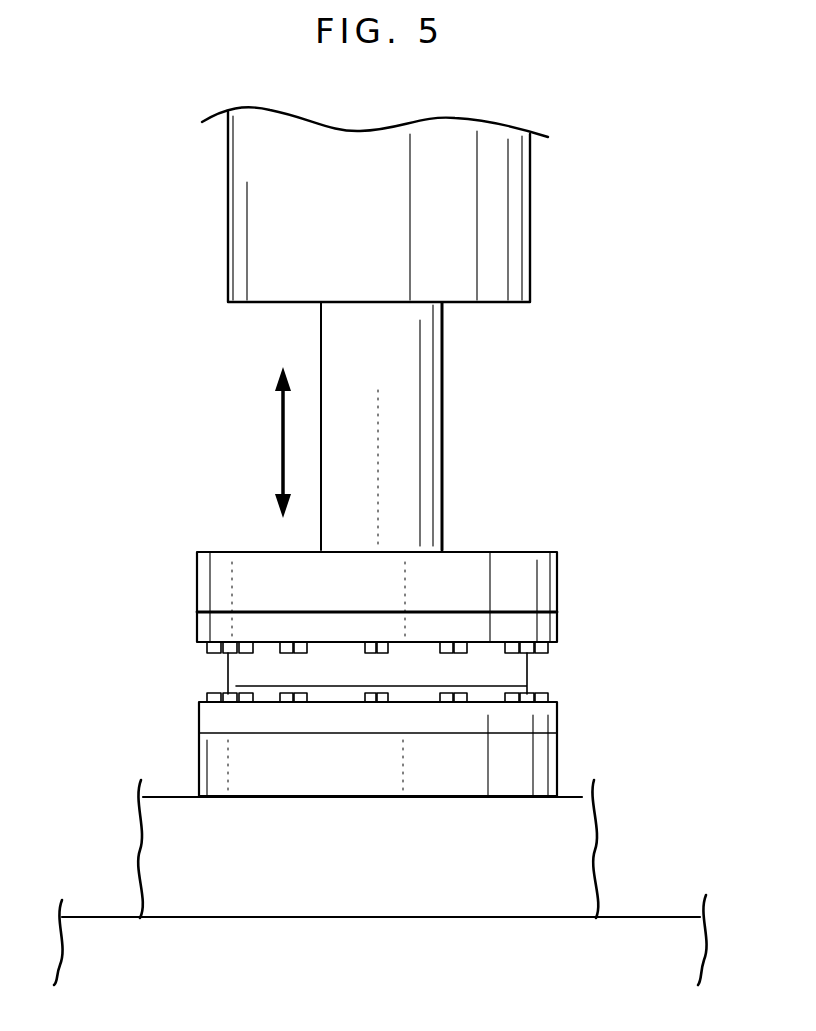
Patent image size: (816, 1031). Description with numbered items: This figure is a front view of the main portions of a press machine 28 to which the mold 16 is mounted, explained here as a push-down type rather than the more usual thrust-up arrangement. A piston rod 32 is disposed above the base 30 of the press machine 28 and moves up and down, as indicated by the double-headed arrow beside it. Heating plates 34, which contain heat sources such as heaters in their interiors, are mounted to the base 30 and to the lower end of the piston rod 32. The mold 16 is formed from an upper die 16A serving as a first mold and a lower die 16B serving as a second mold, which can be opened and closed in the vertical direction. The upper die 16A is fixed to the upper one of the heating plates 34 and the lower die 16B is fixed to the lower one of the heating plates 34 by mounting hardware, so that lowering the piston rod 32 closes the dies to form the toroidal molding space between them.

The press machine 28 is at (566, 259).
The piston rod 32 is at (443, 427).
The heating plates 34 is at (557, 725).
The mold 16 is at (275, 679).
The upper die 16A is at (230, 663).
The lower die 16B is at (260, 692).
The base 30 is at (585, 850).